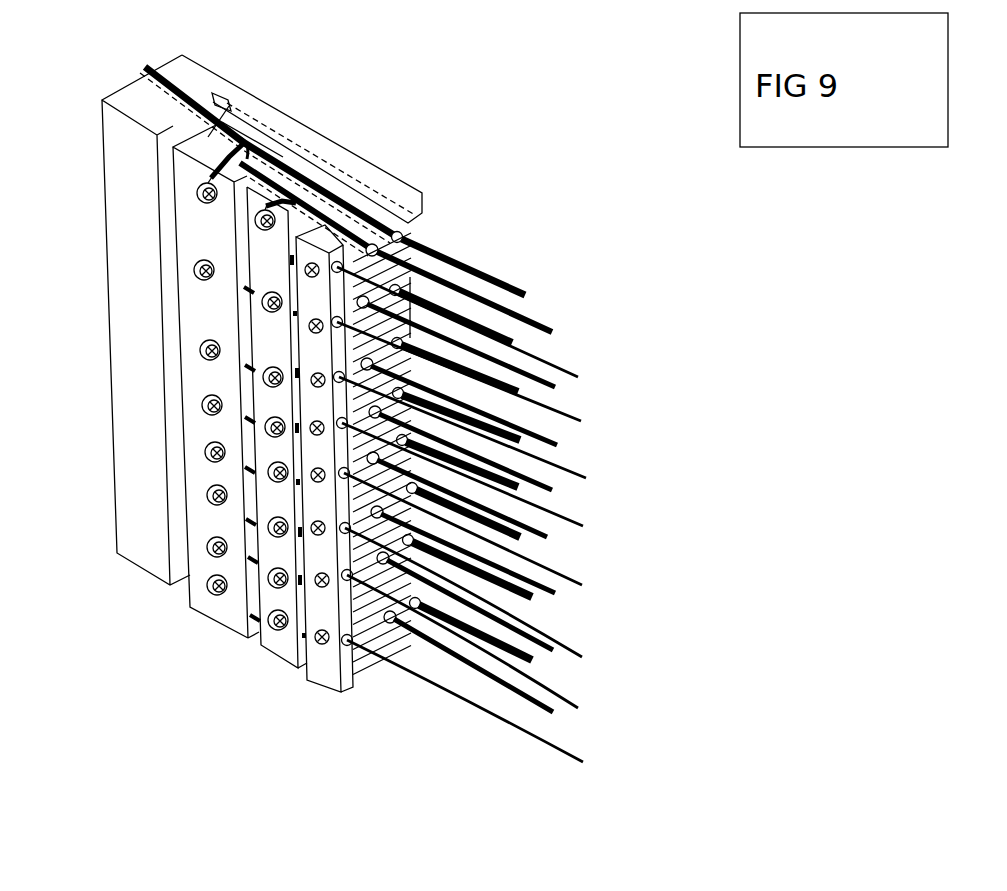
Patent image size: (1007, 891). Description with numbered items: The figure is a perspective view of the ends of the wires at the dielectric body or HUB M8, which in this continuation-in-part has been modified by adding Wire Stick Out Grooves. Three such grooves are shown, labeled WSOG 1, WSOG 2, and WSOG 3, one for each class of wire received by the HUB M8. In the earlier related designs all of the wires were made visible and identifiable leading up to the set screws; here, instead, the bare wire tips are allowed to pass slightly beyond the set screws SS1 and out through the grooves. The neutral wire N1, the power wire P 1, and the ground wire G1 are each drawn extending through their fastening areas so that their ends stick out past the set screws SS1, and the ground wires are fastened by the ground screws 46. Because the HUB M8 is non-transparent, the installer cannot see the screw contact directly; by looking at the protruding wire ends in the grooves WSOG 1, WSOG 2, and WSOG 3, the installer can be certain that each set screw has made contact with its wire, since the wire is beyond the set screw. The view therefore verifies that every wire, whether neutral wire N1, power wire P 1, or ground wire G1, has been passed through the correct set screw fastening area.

The Wire Stick Out Groove WSOG 3 is at (168, 132).
The Wire Stick Out Groove WSOG 2 is at (255, 640).
The Wire Stick Out Groove WSOG 1 is at (304, 680).
The dielectric body or HUB M8 is at (365, 150).
The neutral wire N1 is at (512, 277).
The power wire P 1 is at (550, 318).
The ground wire G1 is at (585, 366).
The set screws SS1 is at (250, 223).
The ground screws 46 is at (316, 437).